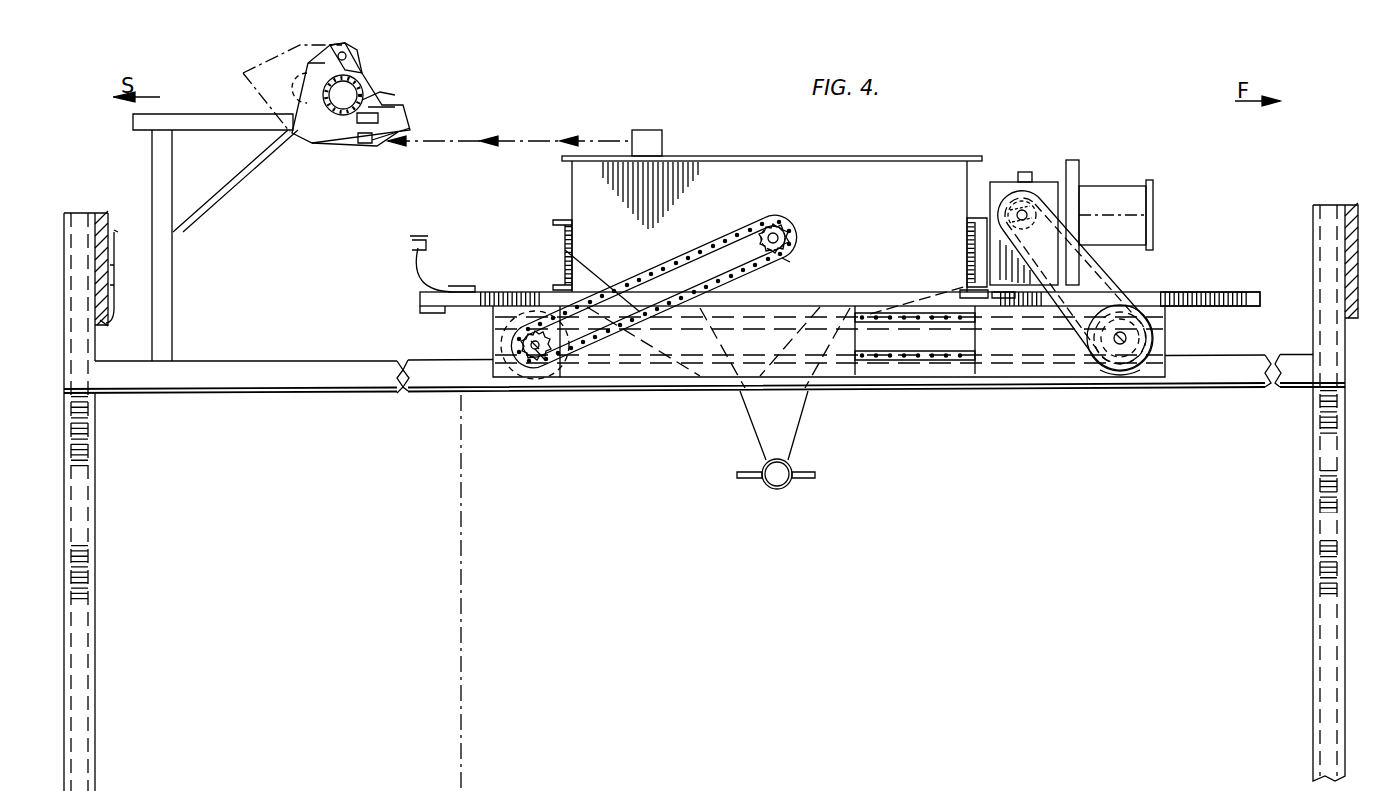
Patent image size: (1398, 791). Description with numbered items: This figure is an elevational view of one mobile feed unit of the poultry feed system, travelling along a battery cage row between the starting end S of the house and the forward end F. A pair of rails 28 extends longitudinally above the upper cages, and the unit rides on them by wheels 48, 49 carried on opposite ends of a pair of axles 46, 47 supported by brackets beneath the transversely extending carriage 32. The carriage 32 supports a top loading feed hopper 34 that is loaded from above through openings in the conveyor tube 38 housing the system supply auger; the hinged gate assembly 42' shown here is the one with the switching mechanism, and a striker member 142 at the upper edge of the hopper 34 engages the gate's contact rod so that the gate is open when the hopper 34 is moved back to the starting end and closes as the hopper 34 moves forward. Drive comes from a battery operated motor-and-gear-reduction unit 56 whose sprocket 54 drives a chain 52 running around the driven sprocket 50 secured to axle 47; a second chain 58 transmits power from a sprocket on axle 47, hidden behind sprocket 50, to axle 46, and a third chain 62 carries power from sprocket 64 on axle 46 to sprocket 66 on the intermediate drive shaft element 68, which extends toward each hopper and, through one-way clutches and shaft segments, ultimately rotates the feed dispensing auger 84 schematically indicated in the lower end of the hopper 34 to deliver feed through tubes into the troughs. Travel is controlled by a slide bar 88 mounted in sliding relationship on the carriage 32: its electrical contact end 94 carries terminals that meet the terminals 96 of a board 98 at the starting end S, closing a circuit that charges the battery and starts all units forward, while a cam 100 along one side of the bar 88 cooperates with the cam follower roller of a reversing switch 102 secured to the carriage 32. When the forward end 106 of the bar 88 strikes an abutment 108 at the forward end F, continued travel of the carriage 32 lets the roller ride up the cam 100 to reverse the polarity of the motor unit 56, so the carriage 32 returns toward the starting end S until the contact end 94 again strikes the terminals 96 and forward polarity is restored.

The rails 28 is at (425, 372).
The carriage 32 is at (565, 251).
The feed hopper 34 is at (882, 208).
The conveyor tube 38 is at (358, 84).
The gate assembly 42' is at (326, 119).
The axle 46 is at (530, 347).
The axle 47 is at (1116, 338).
The wheel 48 is at (540, 378).
The wheel 49 is at (1134, 373).
The driven sprocket 50 is at (1158, 336).
The chain 52 is at (1104, 266).
The sprocket 54 is at (1080, 258).
The motor-and-gear-reduction unit 56 is at (1036, 166).
The second chain 58 is at (955, 326).
The third chain 62 is at (660, 262).
The sprocket 64 is at (532, 349).
The sprocket 66 is at (792, 262).
The intermediate drive shaft element 68 is at (776, 235).
The feed dispensing auger 84 is at (783, 482).
The slide bar 88 is at (825, 303).
The electrical contact end 94 is at (434, 271).
The terminals 96 is at (113, 238).
The board 98 is at (101, 325).
The cam 100 is at (1002, 300).
The reversing switch 102 is at (965, 297).
The forward end 106 is at (1280, 268).
The abutment 108 is at (1356, 232).
The striker member 142 is at (664, 143).